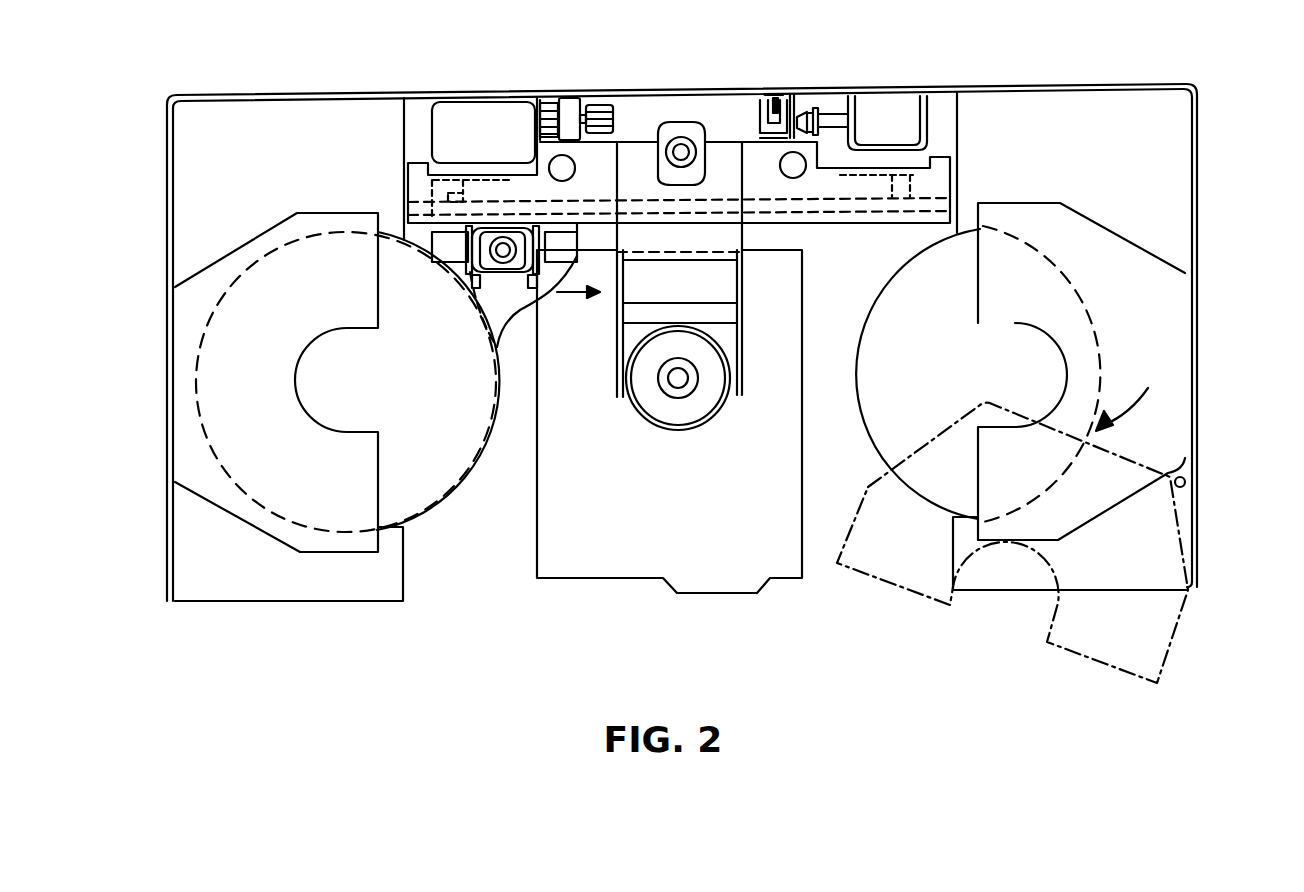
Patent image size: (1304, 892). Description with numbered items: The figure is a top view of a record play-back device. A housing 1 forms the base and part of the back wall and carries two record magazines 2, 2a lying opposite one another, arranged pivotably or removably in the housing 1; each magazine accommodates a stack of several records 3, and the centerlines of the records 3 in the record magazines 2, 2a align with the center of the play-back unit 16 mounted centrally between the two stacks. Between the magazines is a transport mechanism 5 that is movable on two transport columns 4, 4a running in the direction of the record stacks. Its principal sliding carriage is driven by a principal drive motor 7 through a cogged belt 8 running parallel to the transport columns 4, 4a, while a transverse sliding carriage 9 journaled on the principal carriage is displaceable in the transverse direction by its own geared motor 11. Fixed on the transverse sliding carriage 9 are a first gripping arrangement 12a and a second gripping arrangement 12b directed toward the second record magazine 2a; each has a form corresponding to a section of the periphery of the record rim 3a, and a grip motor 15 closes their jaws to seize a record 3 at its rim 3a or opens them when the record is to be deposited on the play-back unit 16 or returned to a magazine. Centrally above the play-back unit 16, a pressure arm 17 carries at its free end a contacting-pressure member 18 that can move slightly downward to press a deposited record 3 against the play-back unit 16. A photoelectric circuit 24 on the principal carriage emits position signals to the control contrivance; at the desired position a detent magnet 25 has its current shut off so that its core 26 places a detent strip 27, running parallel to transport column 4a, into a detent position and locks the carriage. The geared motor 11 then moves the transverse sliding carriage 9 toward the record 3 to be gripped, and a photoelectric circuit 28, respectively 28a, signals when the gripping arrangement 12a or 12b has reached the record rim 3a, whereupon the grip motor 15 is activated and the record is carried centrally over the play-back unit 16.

The housing 1 is at (1199, 161).
The record magazine 2 is at (190, 307).
The record magazine 2a is at (1170, 302).
The record 3 is at (330, 413).
The record rim 3a is at (450, 495).
The transport column 4 is at (550, 163).
The transport column 4a is at (796, 152).
The transport mechanism 5 is at (940, 192).
The principal drive motor 7 is at (450, 117).
The cogged belt 8 is at (597, 110).
The transverse sliding carriage 9 is at (437, 198).
The geared motor 11 is at (667, 140).
The first gripping arrangement 12a is at (475, 305).
The second gripping arrangement 12b is at (533, 308).
The grip motor 15 is at (480, 253).
The play-back unit 16 is at (740, 555).
The pressure arm 17 is at (717, 317).
The contacting-pressure member 18 is at (647, 403).
The photoelectric circuit 24 is at (767, 133).
The detent magnet 25 is at (893, 115).
The core 26 is at (837, 115).
The detent strip 27 is at (777, 93).
The photoelectric circuit 28 is at (447, 190).
The photoelectric circuit 28a is at (910, 188).